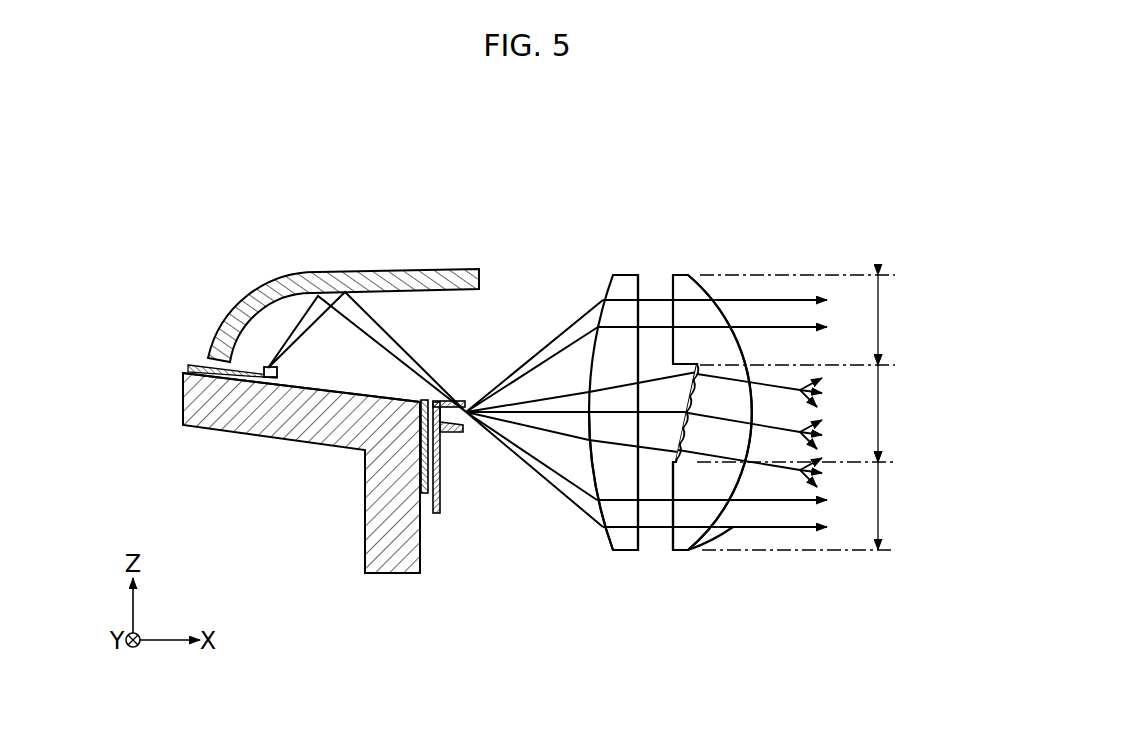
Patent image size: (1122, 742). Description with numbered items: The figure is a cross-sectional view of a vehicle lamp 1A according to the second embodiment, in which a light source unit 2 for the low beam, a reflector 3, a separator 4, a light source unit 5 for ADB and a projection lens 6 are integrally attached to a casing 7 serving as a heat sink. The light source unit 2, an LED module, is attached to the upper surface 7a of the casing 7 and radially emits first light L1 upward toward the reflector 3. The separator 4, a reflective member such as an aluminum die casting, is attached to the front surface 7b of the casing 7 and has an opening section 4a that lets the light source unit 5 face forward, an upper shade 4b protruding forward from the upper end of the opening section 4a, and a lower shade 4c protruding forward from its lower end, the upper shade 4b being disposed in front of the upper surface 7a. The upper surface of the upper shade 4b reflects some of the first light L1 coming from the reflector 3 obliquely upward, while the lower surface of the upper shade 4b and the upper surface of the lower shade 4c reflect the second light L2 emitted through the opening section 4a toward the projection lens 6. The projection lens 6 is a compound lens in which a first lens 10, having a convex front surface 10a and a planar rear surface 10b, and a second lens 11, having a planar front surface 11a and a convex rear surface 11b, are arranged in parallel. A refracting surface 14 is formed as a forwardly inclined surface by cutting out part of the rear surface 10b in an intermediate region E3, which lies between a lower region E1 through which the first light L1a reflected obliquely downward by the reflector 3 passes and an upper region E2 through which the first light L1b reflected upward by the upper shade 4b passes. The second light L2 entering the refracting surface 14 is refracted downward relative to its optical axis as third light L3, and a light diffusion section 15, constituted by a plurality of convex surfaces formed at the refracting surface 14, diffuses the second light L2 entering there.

The vehicle lamp 1A is at (749, 228).
The light source unit for LB 2 is at (270, 366).
The reflector 3 is at (390, 268).
The separator 4 is at (437, 496).
The opening section 4a is at (459, 416).
The upper shade 4b is at (460, 401).
The lower shade 4c is at (455, 432).
The light source unit for ADB 5 is at (423, 414).
The projection lens 6 is at (610, 186).
The casing 7 is at (244, 418).
The upper surface of casing 7a is at (322, 378).
The front surface of casing 7b is at (421, 540).
The first lens 10 is at (686, 275).
The front surface of first lens 10a is at (715, 549).
The rear surface of first lens 10b is at (670, 549).
The second lens 11 is at (625, 275).
The front surface of second lens 11a is at (645, 551).
The rear surface of second lens 11b is at (601, 542).
The refracting surface 14 is at (749, 398).
The light diffusion section 15 is at (694, 438).
The first light L1 is at (442, 290).
The first light reflected downward L1a is at (781, 500).
The first light reflected upward L1b is at (793, 327).
The second light L2 is at (563, 441).
The third light L3 is at (781, 384).
The lower region E1 is at (897, 506).
The upper region E2 is at (897, 320).
The intermediate region E3 is at (897, 413).